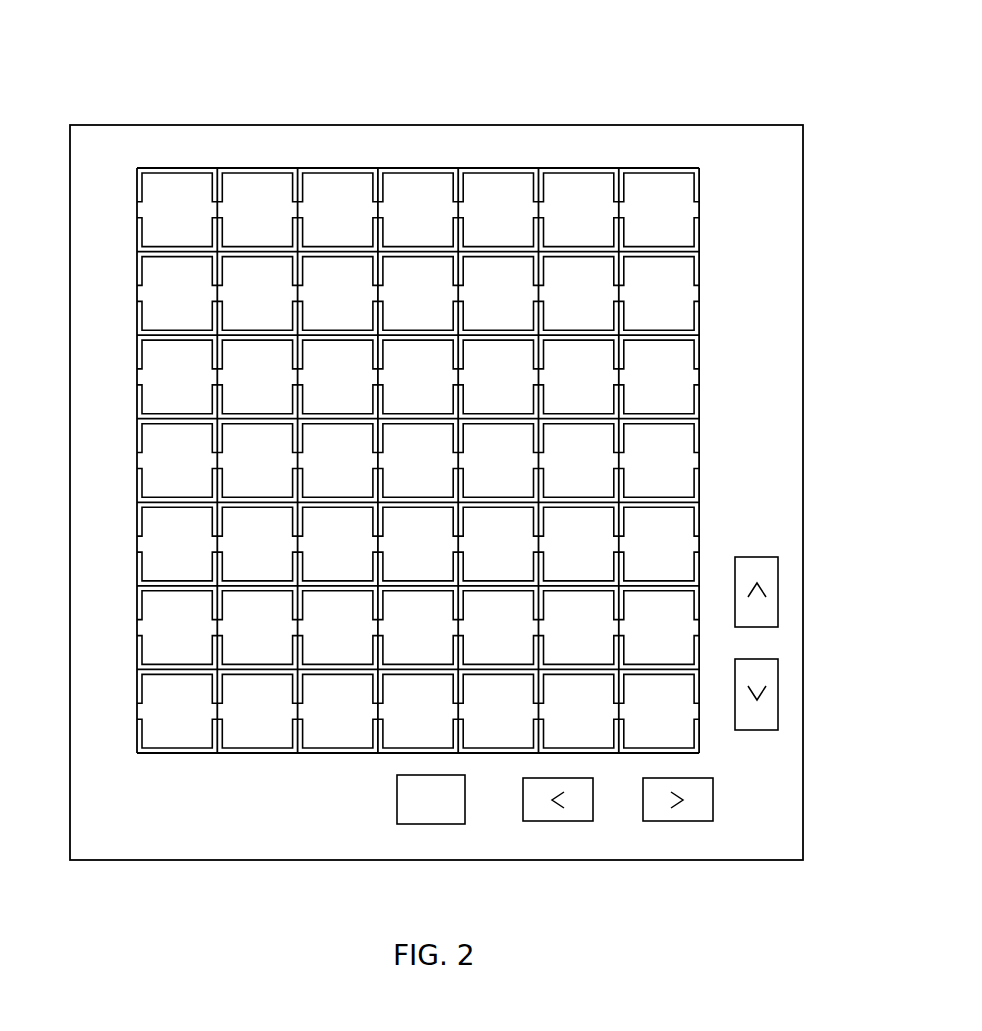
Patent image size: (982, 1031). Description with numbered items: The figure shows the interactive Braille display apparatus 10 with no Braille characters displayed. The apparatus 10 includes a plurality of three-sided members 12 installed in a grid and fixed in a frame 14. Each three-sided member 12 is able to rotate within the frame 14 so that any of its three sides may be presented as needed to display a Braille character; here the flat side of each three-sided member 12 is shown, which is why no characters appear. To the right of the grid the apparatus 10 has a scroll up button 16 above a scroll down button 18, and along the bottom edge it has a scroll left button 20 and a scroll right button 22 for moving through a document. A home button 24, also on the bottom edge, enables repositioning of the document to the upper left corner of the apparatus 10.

The interactive Braille display apparatus 10 is at (660, 76).
The 3-sided member 12 is at (256, 734).
The frame 14 is at (185, 825).
The scroll up button 16 is at (770, 591).
The scroll down button 18 is at (770, 695).
The scroll left button 20 is at (563, 815).
The scroll right button 22 is at (678, 818).
The home button 24 is at (436, 815).